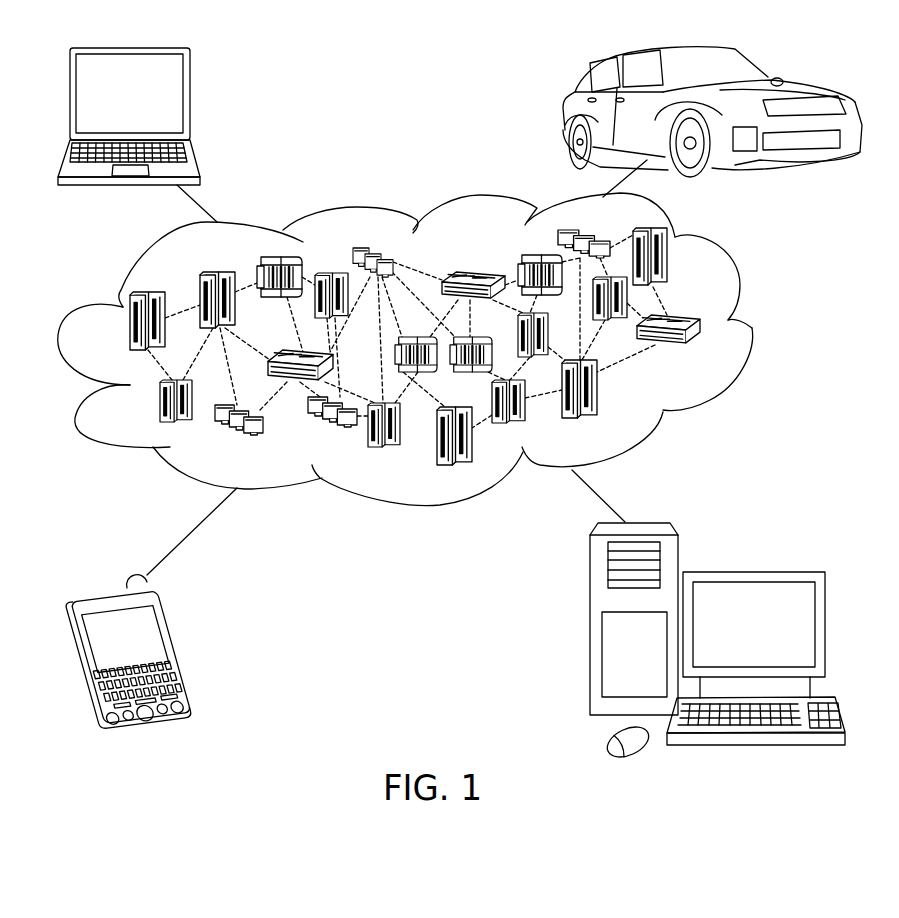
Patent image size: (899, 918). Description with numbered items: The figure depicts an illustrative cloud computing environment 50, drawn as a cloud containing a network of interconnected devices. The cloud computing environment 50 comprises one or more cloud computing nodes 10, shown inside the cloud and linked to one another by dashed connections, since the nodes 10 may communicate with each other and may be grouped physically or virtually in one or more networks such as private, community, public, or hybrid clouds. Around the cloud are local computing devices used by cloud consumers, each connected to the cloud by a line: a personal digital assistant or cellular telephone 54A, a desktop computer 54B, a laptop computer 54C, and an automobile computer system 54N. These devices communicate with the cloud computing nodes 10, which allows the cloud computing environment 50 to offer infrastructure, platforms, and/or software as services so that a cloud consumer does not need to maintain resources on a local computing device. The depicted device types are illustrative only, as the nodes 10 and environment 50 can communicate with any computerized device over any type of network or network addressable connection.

The cloud computing nodes 10 is at (702, 353).
The cloud computing environment 50 is at (752, 328).
The personal digital assistant (PDA) or cellular telephone 54A is at (178, 648).
The desktop computer 54B is at (752, 570).
The laptop computer 54C is at (190, 100).
The automobile computer system 54N is at (563, 113).